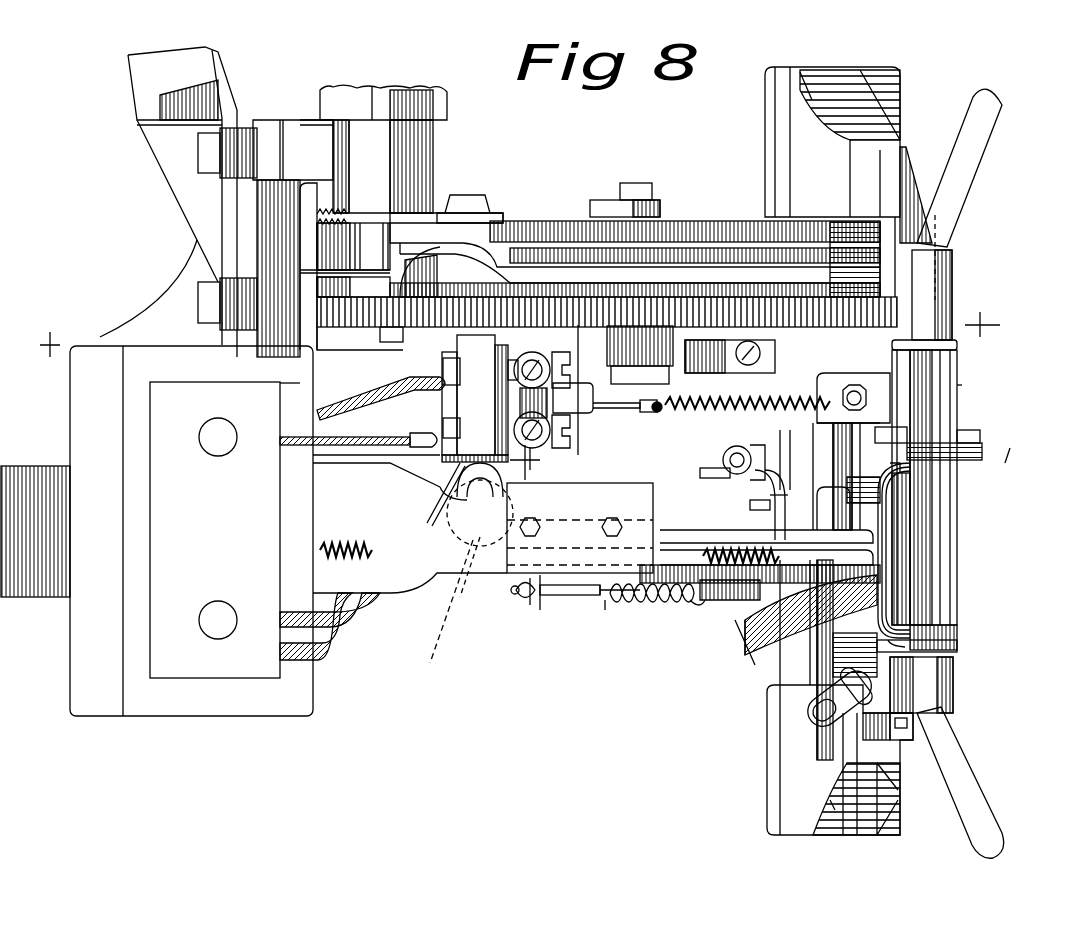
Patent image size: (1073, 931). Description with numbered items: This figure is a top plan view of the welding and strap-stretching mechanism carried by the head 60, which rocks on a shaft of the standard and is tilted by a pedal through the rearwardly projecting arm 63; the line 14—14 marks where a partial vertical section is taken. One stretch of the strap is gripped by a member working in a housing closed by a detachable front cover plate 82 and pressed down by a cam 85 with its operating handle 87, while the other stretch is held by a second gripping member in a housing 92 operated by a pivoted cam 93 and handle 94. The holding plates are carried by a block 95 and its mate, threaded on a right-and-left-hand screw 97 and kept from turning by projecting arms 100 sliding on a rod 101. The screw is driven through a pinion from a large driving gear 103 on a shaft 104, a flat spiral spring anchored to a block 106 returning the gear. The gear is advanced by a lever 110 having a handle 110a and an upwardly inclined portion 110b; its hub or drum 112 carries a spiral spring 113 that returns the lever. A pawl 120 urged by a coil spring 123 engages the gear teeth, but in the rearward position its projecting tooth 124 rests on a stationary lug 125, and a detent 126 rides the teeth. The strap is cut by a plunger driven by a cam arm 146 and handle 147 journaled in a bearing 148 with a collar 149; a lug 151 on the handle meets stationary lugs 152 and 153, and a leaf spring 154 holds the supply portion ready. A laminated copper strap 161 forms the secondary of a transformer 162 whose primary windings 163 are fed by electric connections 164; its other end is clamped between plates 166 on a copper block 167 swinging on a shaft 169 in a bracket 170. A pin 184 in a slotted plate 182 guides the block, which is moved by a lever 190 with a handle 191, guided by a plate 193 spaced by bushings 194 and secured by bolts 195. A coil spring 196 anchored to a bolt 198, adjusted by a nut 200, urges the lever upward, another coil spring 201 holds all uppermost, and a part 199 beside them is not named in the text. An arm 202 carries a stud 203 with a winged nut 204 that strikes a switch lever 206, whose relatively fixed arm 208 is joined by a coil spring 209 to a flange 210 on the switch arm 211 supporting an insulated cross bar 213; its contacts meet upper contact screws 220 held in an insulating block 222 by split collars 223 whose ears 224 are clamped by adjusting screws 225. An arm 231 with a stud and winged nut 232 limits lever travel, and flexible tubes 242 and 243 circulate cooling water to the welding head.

The line 14— 14 is at (34, 348).
The head 60 is at (580, 528).
The arm 63 is at (223, 72).
The front cover plate 82 is at (952, 290).
The cam 85 is at (935, 275).
The operating handle 87 is at (985, 156).
The housing 92 is at (950, 712).
The pivoted cam 93 is at (915, 728).
The operating handle 94 is at (972, 782).
The block 95 is at (918, 160).
The screw 97 is at (858, 75).
The projecting arms 100 is at (765, 92).
The rod 101 is at (820, 228).
The large driving gear 103 is at (510, 325).
The shaft 104 is at (632, 183).
The block 106 is at (640, 330).
The lever 110 is at (560, 262).
The handle 110a is at (267, 233).
The upwardly inclined portion 110b is at (445, 250).
The hub or drum 112 is at (690, 245).
The spiral spring 113 is at (720, 230).
The pawl 120 is at (365, 405).
The coil spring 123 is at (335, 213).
The projecting tooth 124 is at (390, 430).
The stationary lug 125 is at (440, 355).
The detent 126 is at (322, 370).
The cam arm 146 is at (1005, 465).
The handle 147 is at (808, 708).
The bearing 148 is at (957, 390).
The collar 149 is at (958, 346).
The lug 151 is at (980, 435).
The stationary lug 152 is at (985, 445).
The stationary lug 153 is at (907, 436).
The leaf spring 154 is at (945, 222).
The laminated copper strap 161 is at (460, 590).
The electric transformer 162 is at (80, 632).
The primary windings 163 is at (27, 466).
The electric connections 164 is at (342, 450).
The plates 166 is at (500, 585).
The block 167 is at (445, 612).
The shaft 169 is at (480, 495).
The bracket 170 is at (392, 500).
The plate 182 is at (852, 460).
The pin 184 is at (880, 492).
The lever 190 is at (760, 645).
The handle 191 is at (900, 575).
The plate 193 is at (695, 605).
The bushings 194 is at (680, 595).
The bolts 195 is at (620, 600).
The coil spring 196 is at (610, 612).
The bolt 198 is at (590, 600).
The clamp 199 is at (545, 600).
The adjusting nut 200 is at (520, 598).
The coil spring 201 is at (385, 565).
The arm 202 is at (725, 497).
The stud 203 is at (722, 460).
The winged nut 204 is at (705, 480).
The switch lever 206 is at (800, 420).
The relatively fixed arm 208 is at (770, 395).
The coil spring 209 is at (715, 410).
The flange 210 is at (658, 412).
The switch arm 211 is at (620, 410).
The cross bar 213 is at (535, 450).
The contact screws 220 is at (478, 487).
The insulating block 222 is at (462, 470).
The split collars 223 is at (517, 365).
The ears 224 is at (575, 360).
The adjusting screws 225 is at (550, 445).
The arm 231 is at (822, 517).
The winged nut 232 is at (752, 505).
The flexible tube 242 is at (953, 675).
The flexible tube 243 is at (957, 647).